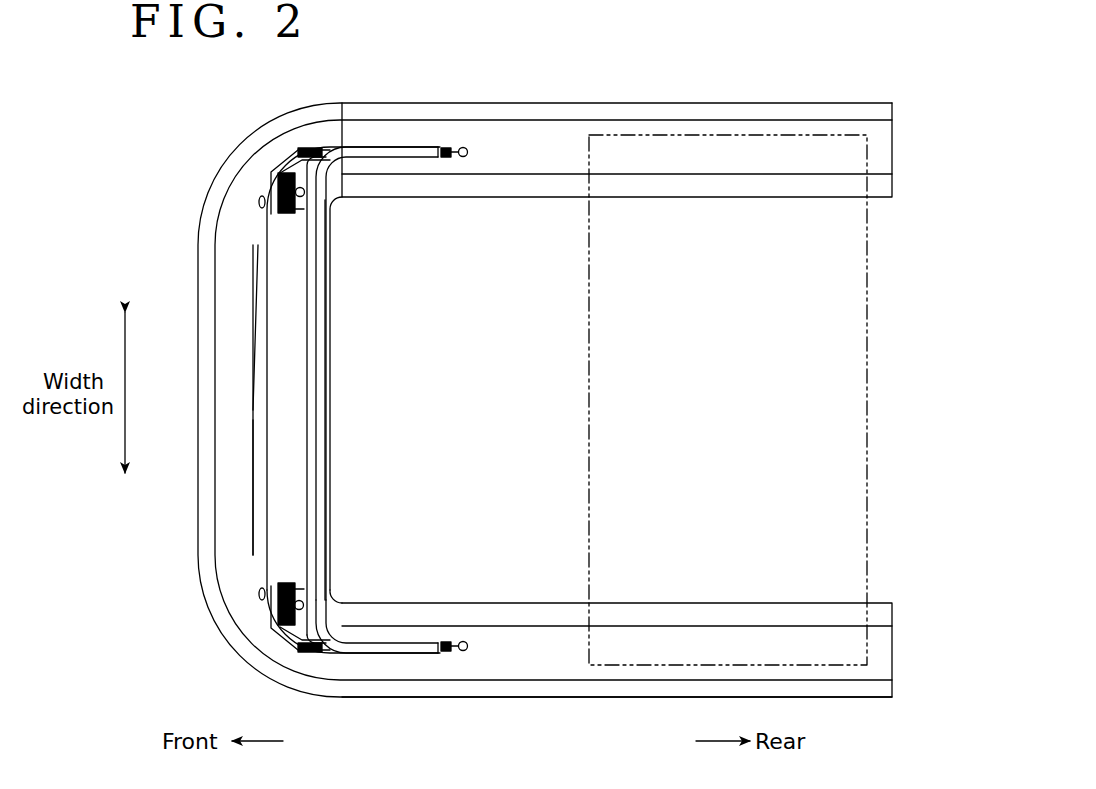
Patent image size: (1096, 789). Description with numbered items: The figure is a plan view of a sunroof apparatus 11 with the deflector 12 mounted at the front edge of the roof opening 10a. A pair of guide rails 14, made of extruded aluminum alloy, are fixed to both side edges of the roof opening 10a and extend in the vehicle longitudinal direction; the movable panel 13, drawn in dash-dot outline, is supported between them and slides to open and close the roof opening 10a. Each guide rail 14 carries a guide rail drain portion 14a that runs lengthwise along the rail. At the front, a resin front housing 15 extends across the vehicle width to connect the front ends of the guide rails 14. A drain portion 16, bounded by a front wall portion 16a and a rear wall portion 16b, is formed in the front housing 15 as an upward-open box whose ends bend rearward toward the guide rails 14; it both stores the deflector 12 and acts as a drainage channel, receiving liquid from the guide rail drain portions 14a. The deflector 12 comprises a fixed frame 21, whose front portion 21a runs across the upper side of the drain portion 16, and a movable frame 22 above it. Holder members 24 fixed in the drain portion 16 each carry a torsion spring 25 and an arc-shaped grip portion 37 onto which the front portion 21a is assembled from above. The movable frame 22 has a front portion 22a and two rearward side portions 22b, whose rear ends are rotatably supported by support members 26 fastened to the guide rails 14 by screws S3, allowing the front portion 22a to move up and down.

The sunroof apparatus 11 is at (758, 78).
The roof opening 10a is at (470, 406).
The deflector 12 is at (250, 248).
The movable panel 13 is at (589, 402).
The guide rail 14 is at (552, 103).
The guide rail drain portion 14a is at (405, 119).
The front housing 15 is at (198, 262).
The drain portion 16 is at (214, 348).
The front wall portion 16a is at (200, 298).
The rear wall portion 16b is at (305, 302).
The fixed frame 21 is at (253, 410).
The front portion 21a is at (253, 455).
The movable frame 22 is at (316, 376).
The front portion 22a is at (325, 437).
The side portion 22b is at (398, 158).
The holder member 24 is at (290, 216).
The torsion spring 25 is at (290, 160).
The support member 26 is at (456, 162).
The grip portion 37 is at (260, 200).
The screw S3 is at (468, 152).